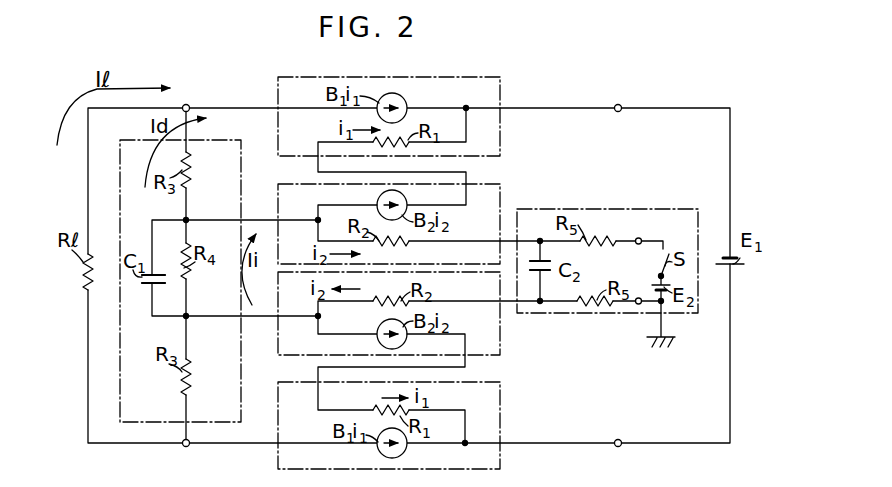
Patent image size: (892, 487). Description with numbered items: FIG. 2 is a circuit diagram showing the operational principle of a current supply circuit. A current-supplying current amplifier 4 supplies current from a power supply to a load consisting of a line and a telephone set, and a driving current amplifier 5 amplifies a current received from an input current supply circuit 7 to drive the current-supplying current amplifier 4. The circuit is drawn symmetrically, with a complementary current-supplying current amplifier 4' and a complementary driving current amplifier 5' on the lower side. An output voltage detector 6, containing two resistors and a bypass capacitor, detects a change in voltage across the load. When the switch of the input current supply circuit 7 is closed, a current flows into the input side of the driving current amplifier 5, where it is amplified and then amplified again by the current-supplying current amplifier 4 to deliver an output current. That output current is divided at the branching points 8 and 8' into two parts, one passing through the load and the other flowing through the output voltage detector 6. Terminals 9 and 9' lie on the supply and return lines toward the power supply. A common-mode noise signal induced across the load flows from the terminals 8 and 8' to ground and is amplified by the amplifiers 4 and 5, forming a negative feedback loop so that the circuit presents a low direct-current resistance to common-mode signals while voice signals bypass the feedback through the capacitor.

The current-supplying current amplifier 4 is at (406, 111).
The current-supplying current amplifier (complementary block) 4' is at (409, 429).
The driving current amplifier 5 is at (404, 212).
The driving current amplifier (complementary block) 5' is at (405, 318).
The output voltage detector 6 is at (241, 180).
The input current supply circuit 7 is at (655, 209).
The branching point (output terminal) 8 is at (193, 91).
The branching point (output terminal) 8' is at (197, 457).
The terminal 9 is at (631, 90).
The terminal 9' is at (636, 459).